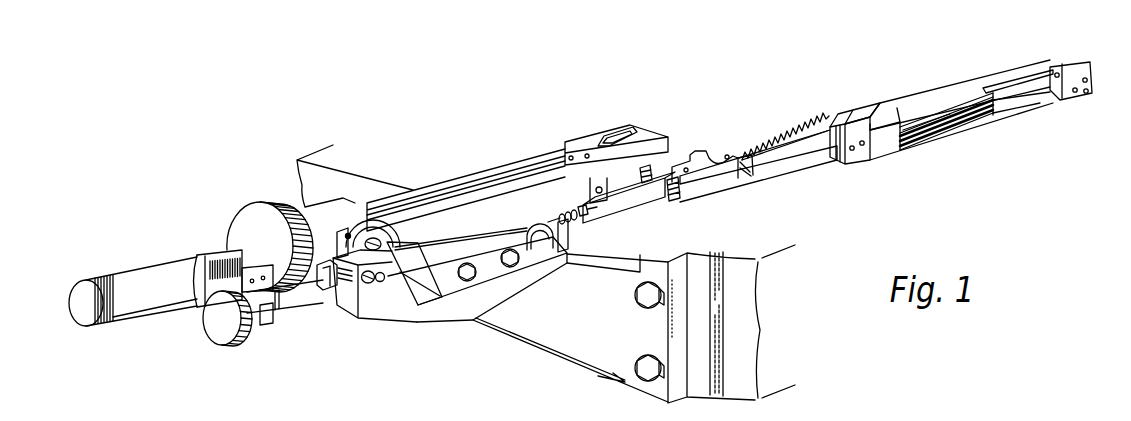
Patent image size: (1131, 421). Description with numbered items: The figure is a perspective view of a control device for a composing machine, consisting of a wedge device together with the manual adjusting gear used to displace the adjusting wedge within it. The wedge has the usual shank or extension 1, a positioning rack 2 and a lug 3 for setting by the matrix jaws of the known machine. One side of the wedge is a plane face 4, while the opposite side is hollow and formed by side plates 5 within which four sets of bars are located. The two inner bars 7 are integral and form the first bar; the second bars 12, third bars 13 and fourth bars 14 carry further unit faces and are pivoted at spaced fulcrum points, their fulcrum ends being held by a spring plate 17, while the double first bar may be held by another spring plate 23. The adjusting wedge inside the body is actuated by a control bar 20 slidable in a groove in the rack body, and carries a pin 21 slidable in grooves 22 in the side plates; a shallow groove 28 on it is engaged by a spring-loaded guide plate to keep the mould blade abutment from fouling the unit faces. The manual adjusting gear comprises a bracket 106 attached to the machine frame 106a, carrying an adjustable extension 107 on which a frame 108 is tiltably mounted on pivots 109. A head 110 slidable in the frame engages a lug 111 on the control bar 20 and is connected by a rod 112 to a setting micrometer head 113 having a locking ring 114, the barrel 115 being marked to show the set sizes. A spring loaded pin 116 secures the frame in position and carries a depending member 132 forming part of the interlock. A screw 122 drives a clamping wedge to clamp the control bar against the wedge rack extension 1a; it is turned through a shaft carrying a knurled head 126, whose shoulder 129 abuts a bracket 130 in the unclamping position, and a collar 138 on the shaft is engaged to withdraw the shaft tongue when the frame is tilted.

The shank or extension 1 is at (740, 177).
The wedge rack extension 1a is at (637, 205).
The positioning rack 2 is at (773, 148).
The lug 3 is at (703, 152).
The plane face 4 is at (873, 116).
The side plates 5 is at (897, 113).
The inner bars 7 is at (907, 140).
The second bars 12 is at (929, 133).
The third bars 13 is at (930, 112).
The fourth bars 14 is at (963, 107).
The spring plate 17 is at (863, 150).
The control bar 20 is at (651, 182).
The pin 21 is at (1057, 68).
The grooves 22 is at (1000, 80).
The spring plate 23 is at (1020, 102).
The groove 28 is at (983, 120).
The bracket 106 is at (575, 355).
The machine frame 106a is at (752, 337).
The adjustable extension 107 is at (457, 317).
The frame 108 is at (473, 175).
The pivots 109 is at (375, 240).
The head 110 is at (582, 142).
The lug 111 is at (603, 136).
The rod 112 is at (537, 165).
The setting micrometer head 113 is at (137, 277).
The locking ring 114 is at (248, 222).
The barrel 115 is at (210, 258).
The spring loaded pin 116 is at (370, 284).
The screw 122 is at (583, 222).
The knurled head 126 is at (220, 323).
The shoulder 129 is at (564, 252).
The bracket 130 is at (541, 250).
The depending member 132 is at (323, 282).
The collar 138 is at (263, 322).